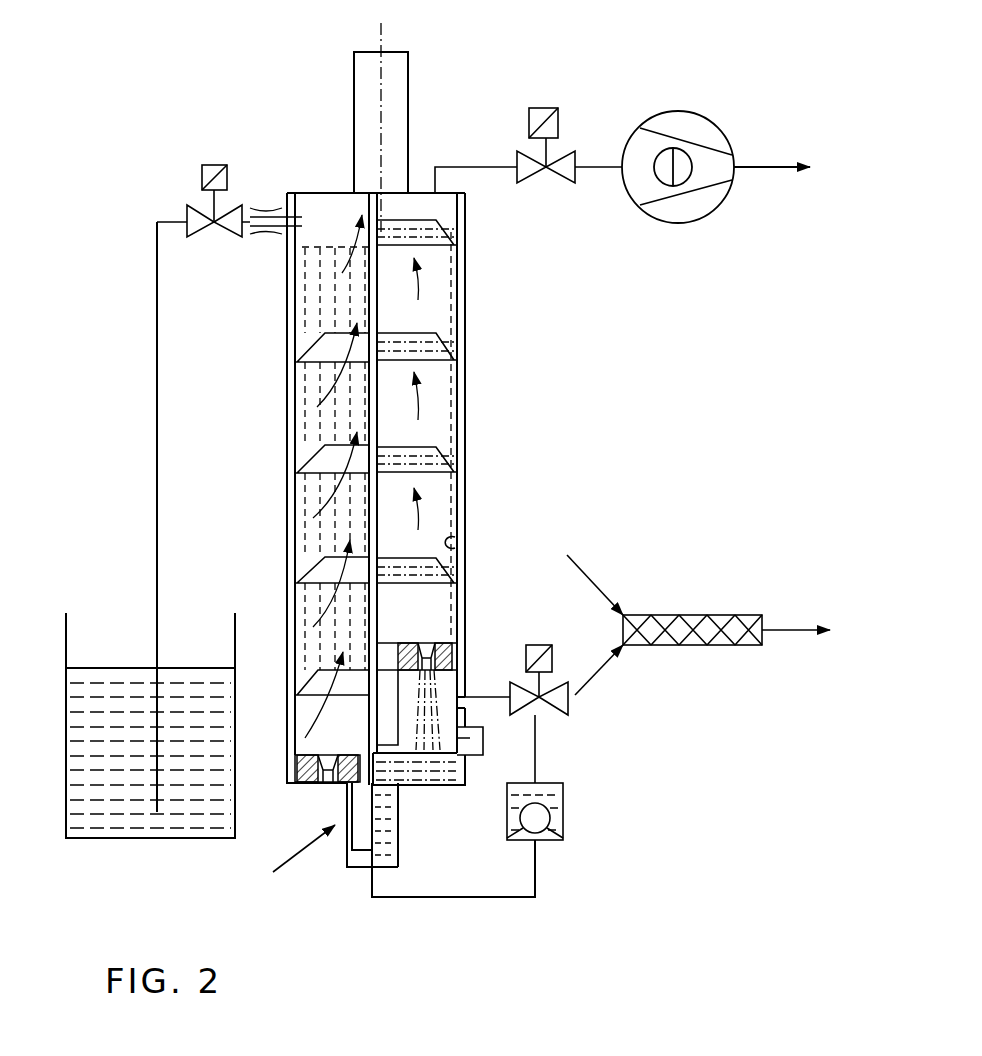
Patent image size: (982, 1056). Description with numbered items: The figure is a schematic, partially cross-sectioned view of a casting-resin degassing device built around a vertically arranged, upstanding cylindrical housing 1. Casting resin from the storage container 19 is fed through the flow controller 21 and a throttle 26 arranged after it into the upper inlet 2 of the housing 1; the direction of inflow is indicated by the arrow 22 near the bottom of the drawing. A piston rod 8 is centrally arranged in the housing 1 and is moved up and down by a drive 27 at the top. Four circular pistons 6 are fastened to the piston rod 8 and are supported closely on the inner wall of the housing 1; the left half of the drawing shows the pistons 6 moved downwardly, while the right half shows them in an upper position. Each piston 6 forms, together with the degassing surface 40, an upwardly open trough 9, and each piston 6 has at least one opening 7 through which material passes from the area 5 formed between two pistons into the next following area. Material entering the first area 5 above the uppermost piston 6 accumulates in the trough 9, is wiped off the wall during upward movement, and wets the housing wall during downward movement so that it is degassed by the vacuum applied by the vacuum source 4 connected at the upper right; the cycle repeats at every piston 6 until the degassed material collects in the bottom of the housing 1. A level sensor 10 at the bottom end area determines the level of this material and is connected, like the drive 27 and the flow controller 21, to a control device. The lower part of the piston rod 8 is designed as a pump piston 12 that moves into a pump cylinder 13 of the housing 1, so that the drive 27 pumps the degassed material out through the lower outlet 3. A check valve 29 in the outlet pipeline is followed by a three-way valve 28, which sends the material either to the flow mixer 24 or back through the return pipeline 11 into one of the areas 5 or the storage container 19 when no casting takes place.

The housing 1 is at (460, 463).
The upper inlet 2 is at (287, 213).
The lower outlet 3 is at (373, 883).
The vacuum source 4 is at (672, 122).
The area 5 is at (440, 410).
The piston 6 is at (332, 343).
The opening 7 is at (427, 642).
The piston rod 8 is at (400, 535).
The trough 9 is at (313, 448).
The level sensor 10 is at (483, 735).
The return pipeline 11 is at (482, 695).
The pump piston 12 is at (358, 822).
The pump cylinder 13 is at (398, 835).
The storage container 19 is at (130, 825).
The flow controller 21 is at (189, 212).
The inflow direction 22 is at (282, 863).
The flow mixer 24 is at (712, 615).
The throttle 26 is at (262, 227).
The drive 27 is at (402, 87).
The three-way valve 28 is at (563, 702).
The check valve 29 is at (558, 808).
The degassing surface 40 is at (455, 543).